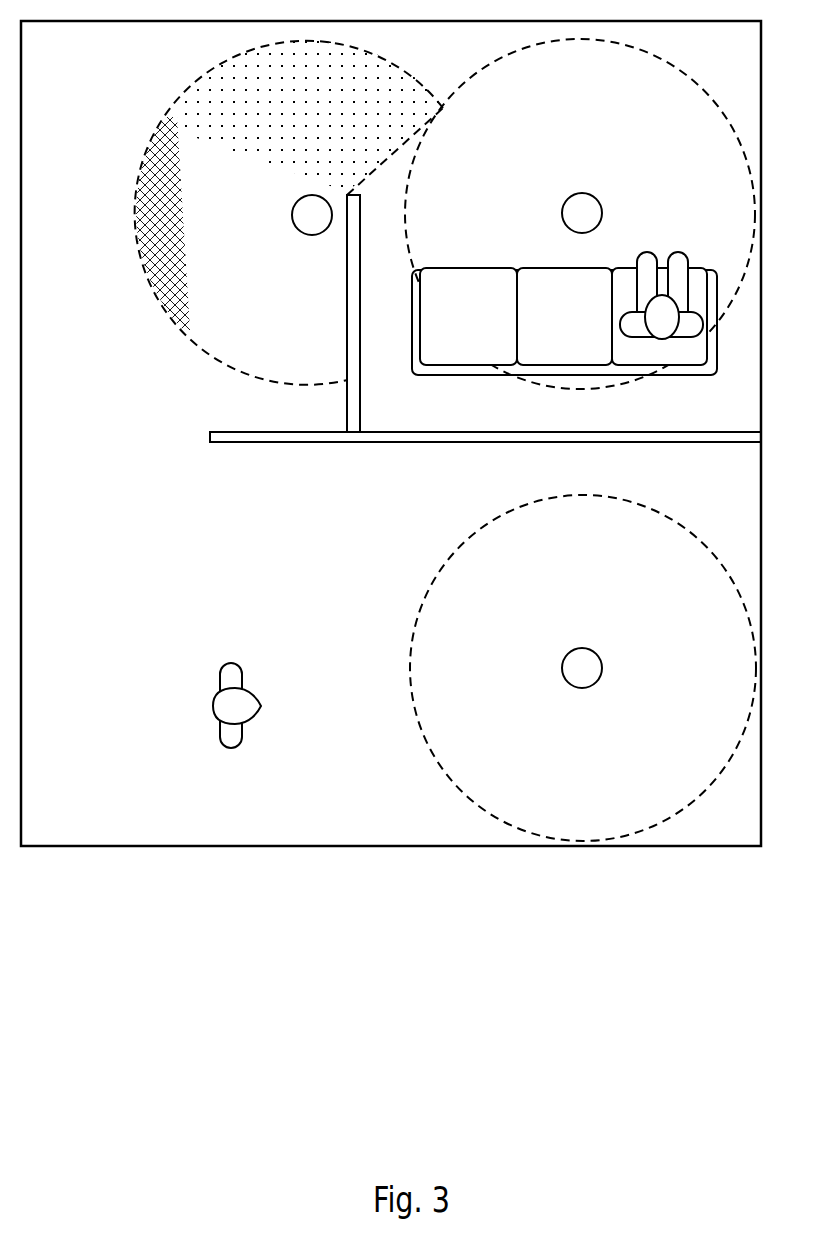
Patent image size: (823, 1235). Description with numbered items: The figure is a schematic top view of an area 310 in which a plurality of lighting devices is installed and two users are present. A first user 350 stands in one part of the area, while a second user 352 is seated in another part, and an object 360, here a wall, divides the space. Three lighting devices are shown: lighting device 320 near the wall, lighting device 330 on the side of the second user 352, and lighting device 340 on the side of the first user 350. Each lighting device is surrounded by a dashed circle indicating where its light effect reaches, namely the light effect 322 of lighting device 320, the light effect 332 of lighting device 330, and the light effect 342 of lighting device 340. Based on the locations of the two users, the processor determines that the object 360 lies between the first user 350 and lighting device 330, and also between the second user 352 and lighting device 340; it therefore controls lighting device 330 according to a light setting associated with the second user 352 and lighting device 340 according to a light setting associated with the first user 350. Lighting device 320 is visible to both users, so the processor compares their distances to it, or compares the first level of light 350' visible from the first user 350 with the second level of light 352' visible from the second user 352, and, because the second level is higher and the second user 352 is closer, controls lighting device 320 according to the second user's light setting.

The room environment 310 is at (98, 889).
The lighting device 320 is at (308, 218).
The field of view of first sensor 322 is at (210, 83).
The lighting device 330 is at (582, 210).
The field of view of second sensor 332 is at (603, 387).
The lighting device 340 is at (588, 668).
The field of view of third sensor 342 is at (420, 636).
The first user 350 is at (181, 705).
The first level of light 350' is at (280, 212).
The second user 352 is at (661, 239).
The second level of light 352' is at (308, 212).
The object 360 is at (225, 433).